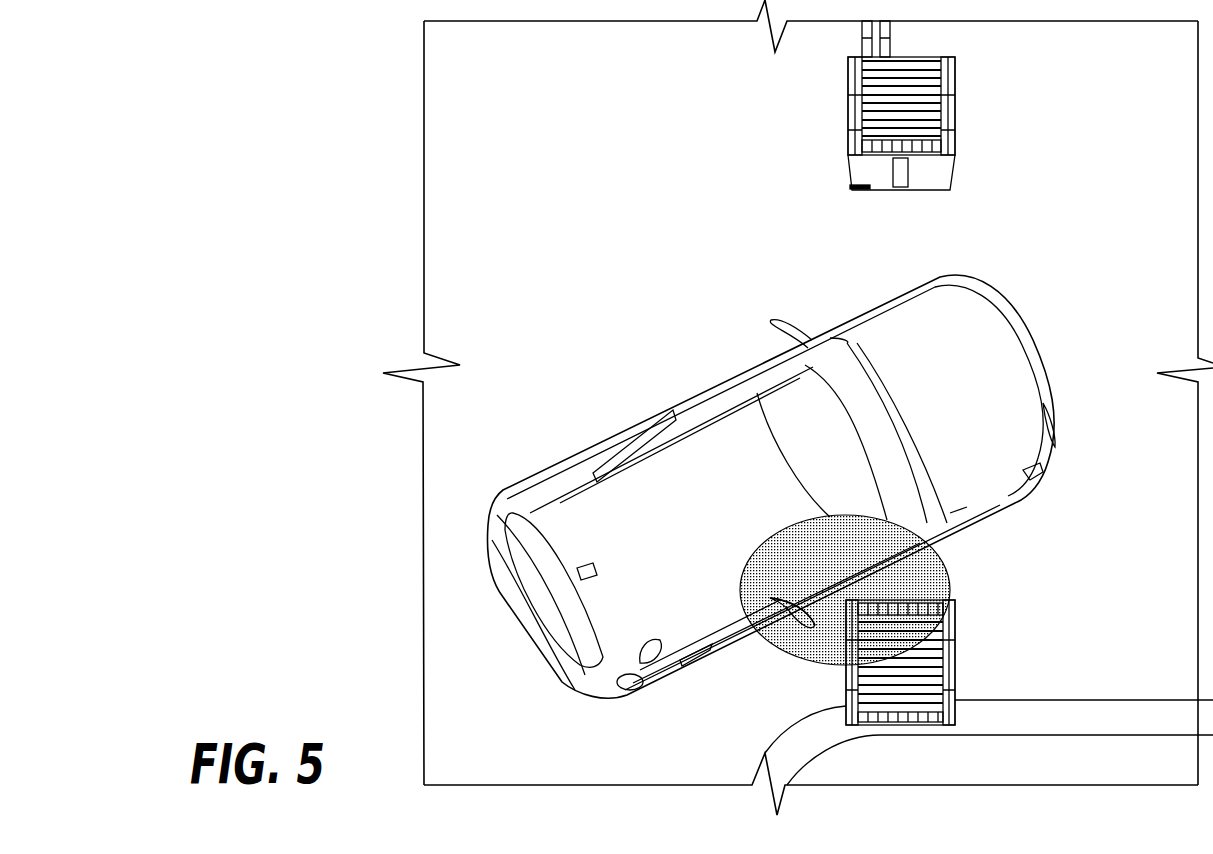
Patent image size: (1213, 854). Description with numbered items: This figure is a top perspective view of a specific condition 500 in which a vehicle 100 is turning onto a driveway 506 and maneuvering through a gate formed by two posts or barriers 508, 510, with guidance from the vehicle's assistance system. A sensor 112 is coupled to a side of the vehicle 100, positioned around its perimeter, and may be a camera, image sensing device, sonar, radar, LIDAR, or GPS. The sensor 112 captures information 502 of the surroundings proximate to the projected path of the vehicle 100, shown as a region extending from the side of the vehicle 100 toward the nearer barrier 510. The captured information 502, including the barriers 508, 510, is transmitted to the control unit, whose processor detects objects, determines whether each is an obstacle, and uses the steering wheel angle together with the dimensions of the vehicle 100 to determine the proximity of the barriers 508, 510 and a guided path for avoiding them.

The condition 500 is at (518, 112).
The driveway 506 is at (1140, 325).
The barrier 508 is at (938, 110).
The barrier 510 is at (946, 686).
The information 502 is at (938, 577).
The vehicle 100 is at (688, 460).
The sensor 112 is at (790, 625).